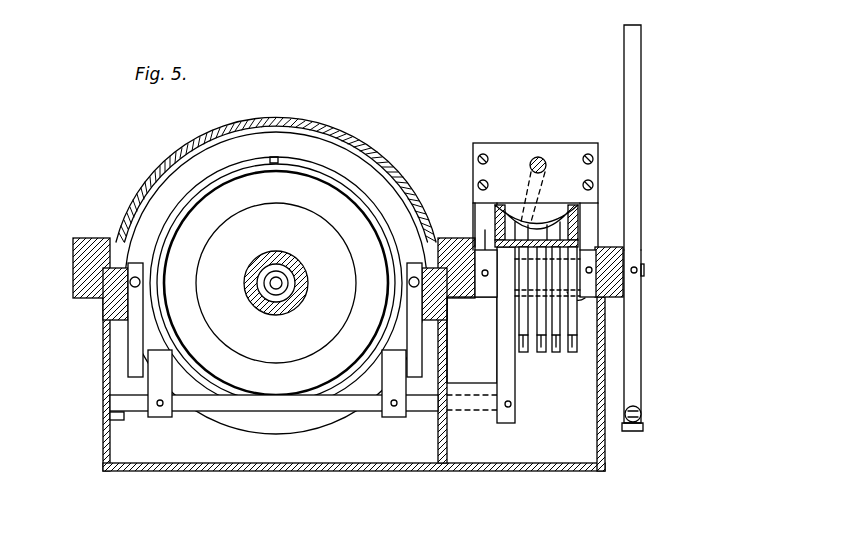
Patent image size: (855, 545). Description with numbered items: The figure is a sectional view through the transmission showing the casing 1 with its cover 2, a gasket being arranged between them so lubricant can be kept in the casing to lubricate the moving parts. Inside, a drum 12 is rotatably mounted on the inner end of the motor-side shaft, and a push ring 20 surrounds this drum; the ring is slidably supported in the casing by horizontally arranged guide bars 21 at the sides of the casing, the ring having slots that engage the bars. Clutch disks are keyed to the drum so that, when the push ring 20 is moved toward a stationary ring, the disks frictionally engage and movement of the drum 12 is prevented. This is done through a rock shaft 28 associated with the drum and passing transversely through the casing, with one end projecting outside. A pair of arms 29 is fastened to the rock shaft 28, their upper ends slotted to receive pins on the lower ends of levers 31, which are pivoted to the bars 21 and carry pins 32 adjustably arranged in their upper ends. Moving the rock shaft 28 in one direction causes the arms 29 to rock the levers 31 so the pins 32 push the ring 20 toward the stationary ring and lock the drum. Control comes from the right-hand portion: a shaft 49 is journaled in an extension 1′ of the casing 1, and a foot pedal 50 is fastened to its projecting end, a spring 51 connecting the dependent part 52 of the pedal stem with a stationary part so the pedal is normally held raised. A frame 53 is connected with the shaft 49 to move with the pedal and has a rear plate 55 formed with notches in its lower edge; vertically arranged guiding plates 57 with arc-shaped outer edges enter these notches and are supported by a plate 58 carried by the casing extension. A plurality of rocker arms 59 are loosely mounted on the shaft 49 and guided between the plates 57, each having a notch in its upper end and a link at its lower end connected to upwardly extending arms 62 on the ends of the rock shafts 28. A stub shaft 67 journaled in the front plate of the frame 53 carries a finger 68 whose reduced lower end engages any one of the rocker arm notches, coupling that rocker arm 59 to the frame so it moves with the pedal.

The casing 1 is at (268, 466).
The extension of the casing 1′ is at (538, 458).
The cover 2 is at (376, 146).
The drum 12 is at (276, 283).
The push ring 20 is at (306, 148).
The guide bars 21 is at (113, 292).
The rock shaft 28 is at (330, 398).
The arms 29 is at (162, 417).
The levers 31 is at (133, 333).
The pins 32 is at (128, 283).
The shaft 49 is at (648, 271).
The foot pedal 50 is at (632, 141).
The spring 51 is at (644, 414).
The dependent part of the pedal stem 52 is at (640, 368).
The frame 53 is at (575, 150).
The rear plate 55 is at (596, 214).
The guiding plates 57 is at (585, 298).
The plate 58 is at (500, 232).
The rocker arms 59 is at (575, 321).
The upwardly extending arms 62 is at (511, 374).
The stub shaft 67 is at (538, 157).
The finger 68 is at (546, 190).